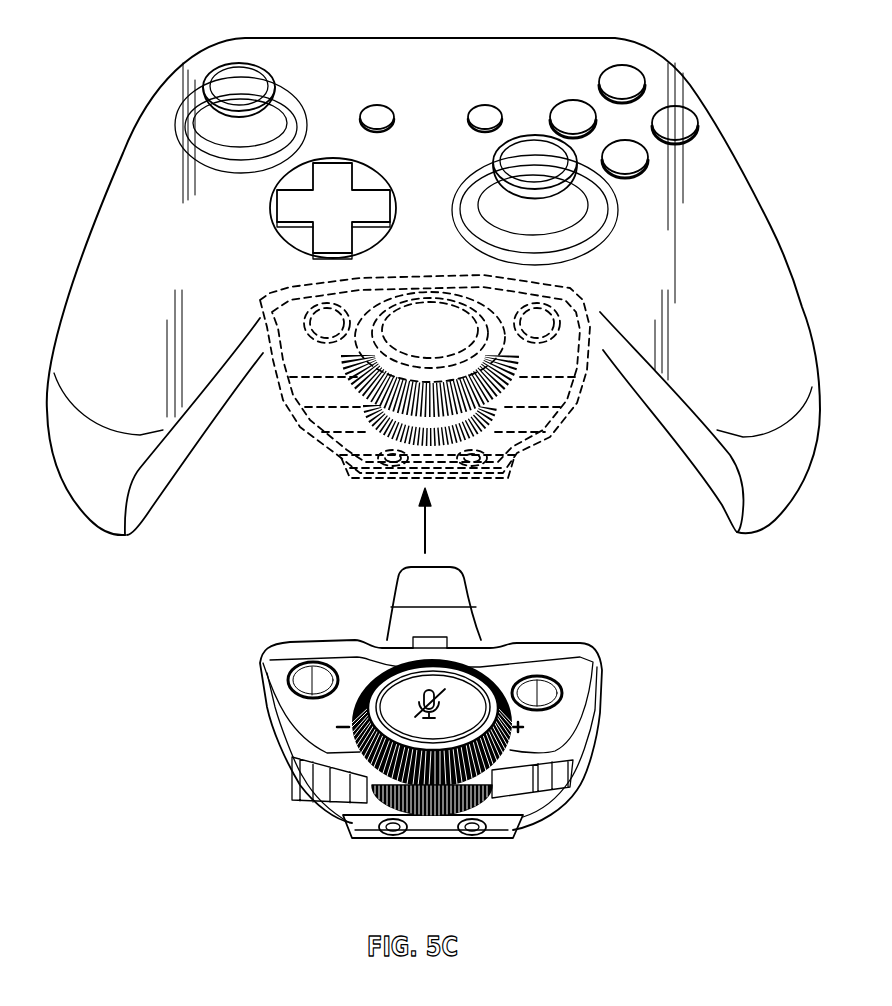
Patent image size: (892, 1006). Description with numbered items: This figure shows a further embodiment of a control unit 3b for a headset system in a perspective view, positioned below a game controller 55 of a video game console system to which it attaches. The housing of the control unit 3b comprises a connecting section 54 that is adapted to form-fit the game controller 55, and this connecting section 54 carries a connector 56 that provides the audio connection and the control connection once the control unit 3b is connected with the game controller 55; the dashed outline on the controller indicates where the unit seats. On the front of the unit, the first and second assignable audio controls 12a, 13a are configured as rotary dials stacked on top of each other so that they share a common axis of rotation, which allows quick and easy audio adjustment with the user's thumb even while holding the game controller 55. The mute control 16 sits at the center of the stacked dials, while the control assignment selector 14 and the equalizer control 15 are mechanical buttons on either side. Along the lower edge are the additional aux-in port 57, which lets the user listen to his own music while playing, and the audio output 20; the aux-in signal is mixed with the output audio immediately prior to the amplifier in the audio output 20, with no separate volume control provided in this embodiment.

The game controller 55 is at (743, 220).
The connecting section 54 is at (458, 591).
The connector 56 is at (408, 638).
The control assignment selector 14 is at (312, 683).
The equalizer control 15 is at (547, 697).
The mute control 16 is at (432, 816).
The audio output 20 is at (472, 832).
The aux-in port 57 is at (393, 832).
The first assignable audio control 12a is at (322, 838).
The second assignable audio control 13a is at (433, 826).
The control unit 3b is at (426, 731).